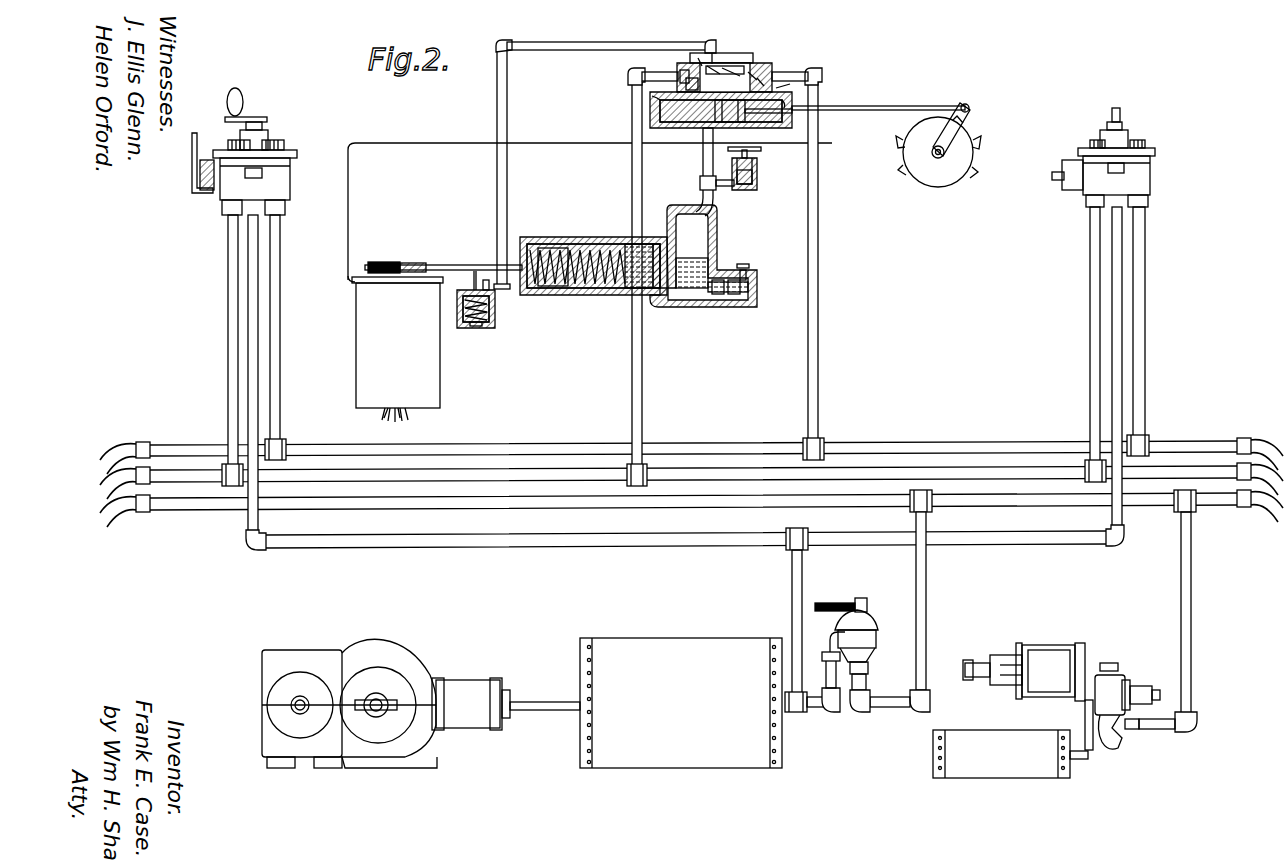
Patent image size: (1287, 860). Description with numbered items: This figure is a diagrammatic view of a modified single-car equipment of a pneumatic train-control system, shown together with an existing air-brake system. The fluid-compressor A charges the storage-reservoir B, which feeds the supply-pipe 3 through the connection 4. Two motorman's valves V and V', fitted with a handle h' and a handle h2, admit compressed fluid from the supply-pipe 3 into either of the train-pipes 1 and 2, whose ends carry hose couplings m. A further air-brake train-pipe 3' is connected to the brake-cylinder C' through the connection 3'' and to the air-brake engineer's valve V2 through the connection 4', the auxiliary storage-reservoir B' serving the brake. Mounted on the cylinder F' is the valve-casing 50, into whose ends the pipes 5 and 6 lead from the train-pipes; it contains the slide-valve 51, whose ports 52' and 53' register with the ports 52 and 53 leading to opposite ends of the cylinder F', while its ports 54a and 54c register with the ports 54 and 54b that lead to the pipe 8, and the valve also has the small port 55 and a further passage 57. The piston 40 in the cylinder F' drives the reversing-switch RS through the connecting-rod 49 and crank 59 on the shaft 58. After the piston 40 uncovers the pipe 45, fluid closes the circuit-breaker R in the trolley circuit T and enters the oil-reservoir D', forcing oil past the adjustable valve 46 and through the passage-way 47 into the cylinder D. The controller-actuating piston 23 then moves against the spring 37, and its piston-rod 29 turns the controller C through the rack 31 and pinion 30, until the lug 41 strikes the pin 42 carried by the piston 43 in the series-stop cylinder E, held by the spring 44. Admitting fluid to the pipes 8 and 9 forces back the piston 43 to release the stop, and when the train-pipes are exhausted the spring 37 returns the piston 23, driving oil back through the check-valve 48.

The train-pipe 1 is at (276, 290).
The train-pipe 2 is at (228, 311).
The supply-pipe 3 is at (704, 378).
The air-brake train-pipe 3' is at (695, 493).
The connection between air-brake train-pipe and brake-cylinder 3'' is at (1178, 611).
The connection between pipe 3 and storage-reservoir 4 is at (796, 620).
The connection to air-brake engineer's valve 4' is at (912, 601).
The pipe 5 is at (632, 380).
The pipe 6 is at (818, 362).
The pipe 8 is at (613, 42).
The connecting-pipe 9 is at (508, 192).
The controller-actuating piston 23 is at (600, 240).
The piston-rod 29 is at (462, 264).
The pinion 30 is at (390, 262).
The rack 31 is at (416, 262).
The spring 37 is at (553, 246).
The piston 40 is at (715, 110).
The lug 41 is at (490, 276).
The pin 42 is at (472, 284).
The piston 43 is at (458, 300).
The spring 44 is at (480, 326).
The pipe 45 is at (714, 208).
The adjustable valve 46 is at (748, 286).
The passage-way 47 is at (698, 306).
The check-valve 48 is at (734, 300).
The connecting-rod 49 is at (872, 100).
The valve-casing 50 is at (690, 60).
The slide-valve 51 is at (775, 82).
The port 52 is at (675, 69).
The port 52' is at (673, 81).
The port 53 is at (807, 69).
The port 53' is at (801, 95).
The port 54 is at (707, 63).
The port 54a is at (722, 66).
The port 54b is at (748, 70).
The port 54c is at (757, 76).
The small port 55 is at (698, 58).
The passage 57 is at (712, 52).
The shaft 58 is at (932, 158).
The crank 59 is at (968, 108).
The fluid-compressor A is at (400, 660).
The storage-reservoir B is at (681, 703).
The auxiliary storage-reservoir B' is at (1001, 754).
The controller C is at (408, 349).
The air-brake cylinder C' is at (1061, 701).
The cylinder D is at (593, 280).
The oil-reservoir D' is at (703, 256).
The series-stop cylinder E is at (495, 318).
The cylinder F' is at (725, 116).
The circuit-breaker R is at (757, 172).
The reversing-switch RS is at (938, 164).
The trolley or motor circuit T is at (832, 141).
The motorman's valve V is at (266, 168).
The motorman's valve V' is at (1118, 157).
The air-brake engineer's valve V2 is at (866, 623).
The handle h' is at (193, 163).
The handle h2 is at (244, 98).
The hose coupling m is at (108, 483).